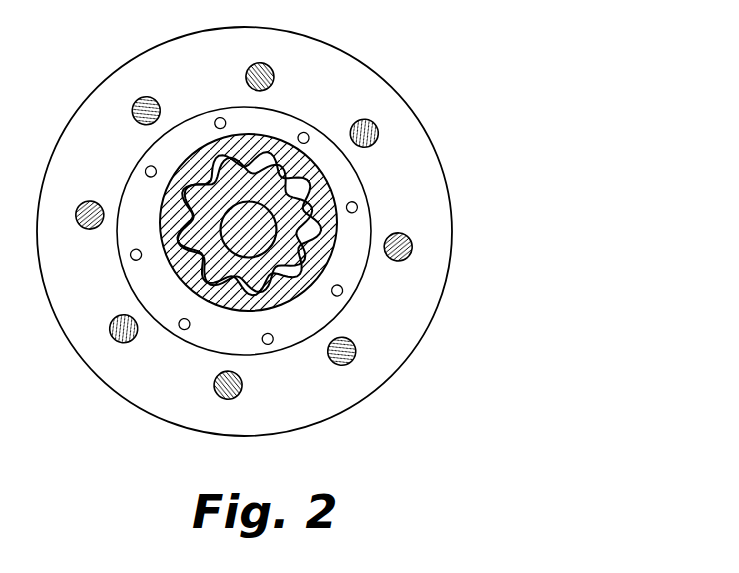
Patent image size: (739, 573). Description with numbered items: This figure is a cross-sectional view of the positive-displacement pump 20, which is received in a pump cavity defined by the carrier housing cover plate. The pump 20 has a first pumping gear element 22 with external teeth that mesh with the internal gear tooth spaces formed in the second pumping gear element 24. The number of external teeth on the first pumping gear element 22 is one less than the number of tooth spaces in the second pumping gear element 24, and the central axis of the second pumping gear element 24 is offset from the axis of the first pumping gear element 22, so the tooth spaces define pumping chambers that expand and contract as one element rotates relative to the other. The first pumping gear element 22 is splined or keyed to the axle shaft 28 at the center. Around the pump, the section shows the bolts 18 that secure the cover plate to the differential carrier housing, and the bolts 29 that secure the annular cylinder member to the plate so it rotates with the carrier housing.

The bolts 18 is at (414, 247).
The positive-displacement pump 20 is at (337, 193).
The first pumping gear element 22 is at (283, 298).
The second pumping gear element 24 is at (257, 153).
The axle shaft 28 is at (208, 248).
The bolts 29 is at (359, 207).